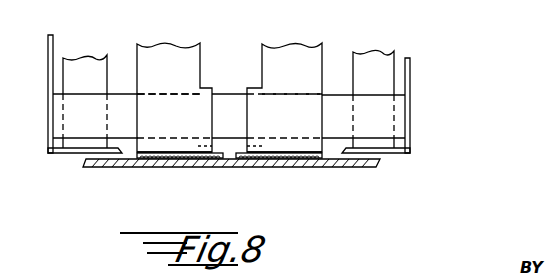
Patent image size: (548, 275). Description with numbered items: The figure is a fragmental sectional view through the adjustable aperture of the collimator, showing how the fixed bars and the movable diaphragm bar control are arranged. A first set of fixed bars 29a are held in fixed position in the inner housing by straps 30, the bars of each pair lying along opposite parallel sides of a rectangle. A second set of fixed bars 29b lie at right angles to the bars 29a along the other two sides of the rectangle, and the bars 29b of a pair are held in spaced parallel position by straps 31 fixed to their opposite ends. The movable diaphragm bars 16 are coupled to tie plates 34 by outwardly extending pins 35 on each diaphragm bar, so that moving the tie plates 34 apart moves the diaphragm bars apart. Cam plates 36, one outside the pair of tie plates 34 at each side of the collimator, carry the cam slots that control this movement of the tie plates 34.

The tall container 16 is at (262, 54).
The fixed bars 29a is at (337, 100).
The fixed bars 29b is at (88, 61).
The straps 30 is at (48, 71).
The straps 31 is at (370, 150).
The tie plates 34 is at (170, 150).
The pin 35 is at (206, 160).
The cam plates 36 is at (88, 164).